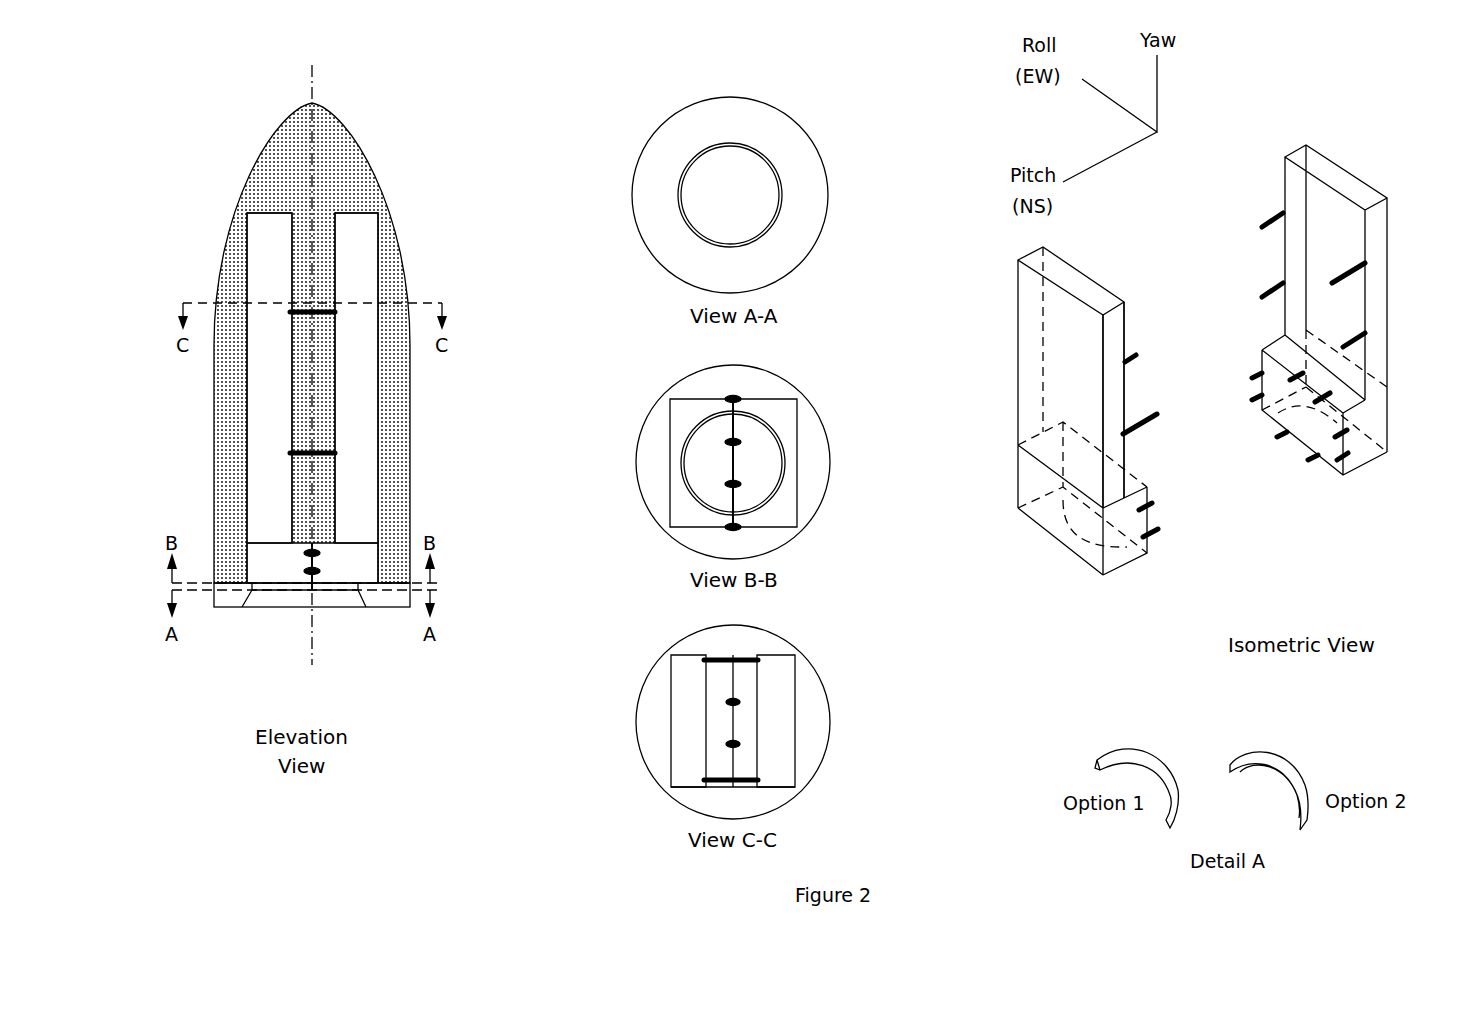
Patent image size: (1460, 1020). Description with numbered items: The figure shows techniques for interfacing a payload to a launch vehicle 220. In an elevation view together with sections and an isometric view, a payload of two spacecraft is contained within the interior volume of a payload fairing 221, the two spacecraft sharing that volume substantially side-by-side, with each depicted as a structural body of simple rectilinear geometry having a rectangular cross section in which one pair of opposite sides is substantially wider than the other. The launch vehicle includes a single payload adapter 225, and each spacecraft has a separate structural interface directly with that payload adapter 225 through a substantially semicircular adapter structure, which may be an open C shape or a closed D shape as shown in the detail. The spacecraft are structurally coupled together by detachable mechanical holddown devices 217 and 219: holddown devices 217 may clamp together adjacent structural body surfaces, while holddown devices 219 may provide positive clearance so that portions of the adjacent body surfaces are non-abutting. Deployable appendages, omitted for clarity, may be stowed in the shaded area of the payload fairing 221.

The launch vehicle 220 is at (184, 64).
The payload fairing 221 is at (390, 174).
The payload adapter 225 is at (367, 595).
The holddown devices 219 is at (318, 325).
The holddown devices 217 is at (318, 557).